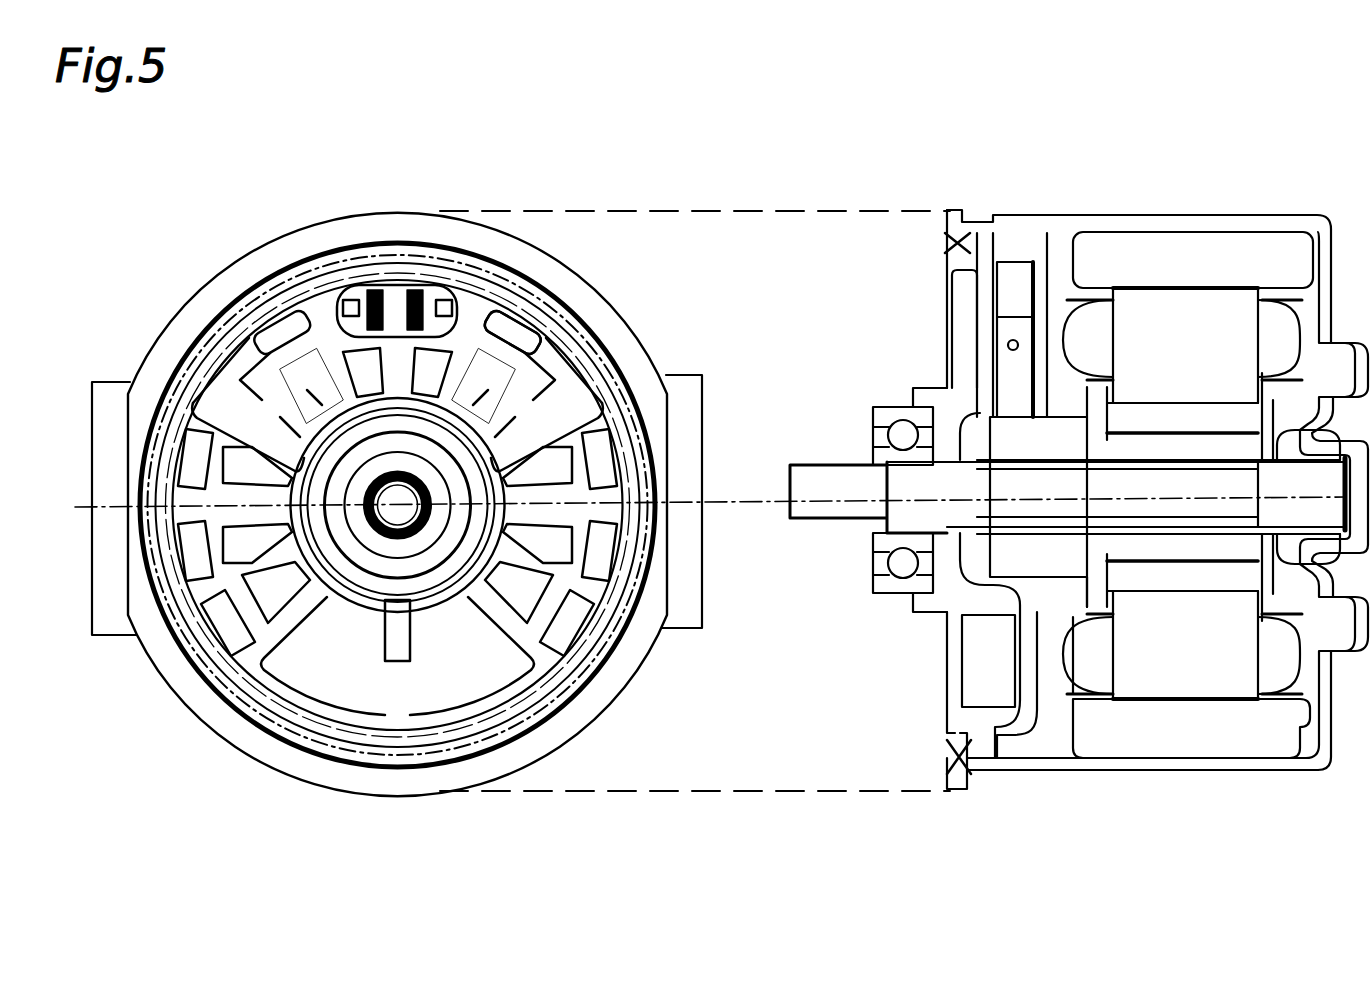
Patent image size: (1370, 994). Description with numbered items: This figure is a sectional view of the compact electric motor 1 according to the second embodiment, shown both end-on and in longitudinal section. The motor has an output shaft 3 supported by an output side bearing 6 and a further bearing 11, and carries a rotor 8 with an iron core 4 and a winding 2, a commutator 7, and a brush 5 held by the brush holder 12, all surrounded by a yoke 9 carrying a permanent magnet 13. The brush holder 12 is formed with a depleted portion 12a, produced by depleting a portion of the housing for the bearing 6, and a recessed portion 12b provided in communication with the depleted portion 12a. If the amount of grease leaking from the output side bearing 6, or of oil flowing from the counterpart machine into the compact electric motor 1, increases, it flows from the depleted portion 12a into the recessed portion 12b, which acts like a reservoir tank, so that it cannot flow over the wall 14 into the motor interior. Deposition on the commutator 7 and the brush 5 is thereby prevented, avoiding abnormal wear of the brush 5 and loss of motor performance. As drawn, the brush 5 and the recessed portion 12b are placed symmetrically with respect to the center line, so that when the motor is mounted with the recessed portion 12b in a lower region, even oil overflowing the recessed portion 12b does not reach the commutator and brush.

The compact electric motor 1 is at (1080, 804).
The winding 2 is at (1085, 655).
The output shaft 3 is at (827, 480).
The iron core 4 is at (1147, 640).
The brush 5 is at (1013, 340).
The bearing 6 is at (900, 433).
The commutator 7 is at (1037, 440).
The rotor 8 is at (1208, 683).
The yoke 9 is at (1160, 765).
The bearing 11 is at (1300, 447).
The brush holder 12 is at (987, 737).
The depleted portion 12a is at (940, 583).
The recessed portion 12b is at (975, 673).
The permanent magnet 13 is at (1253, 730).
The wall 14 is at (941, 415).